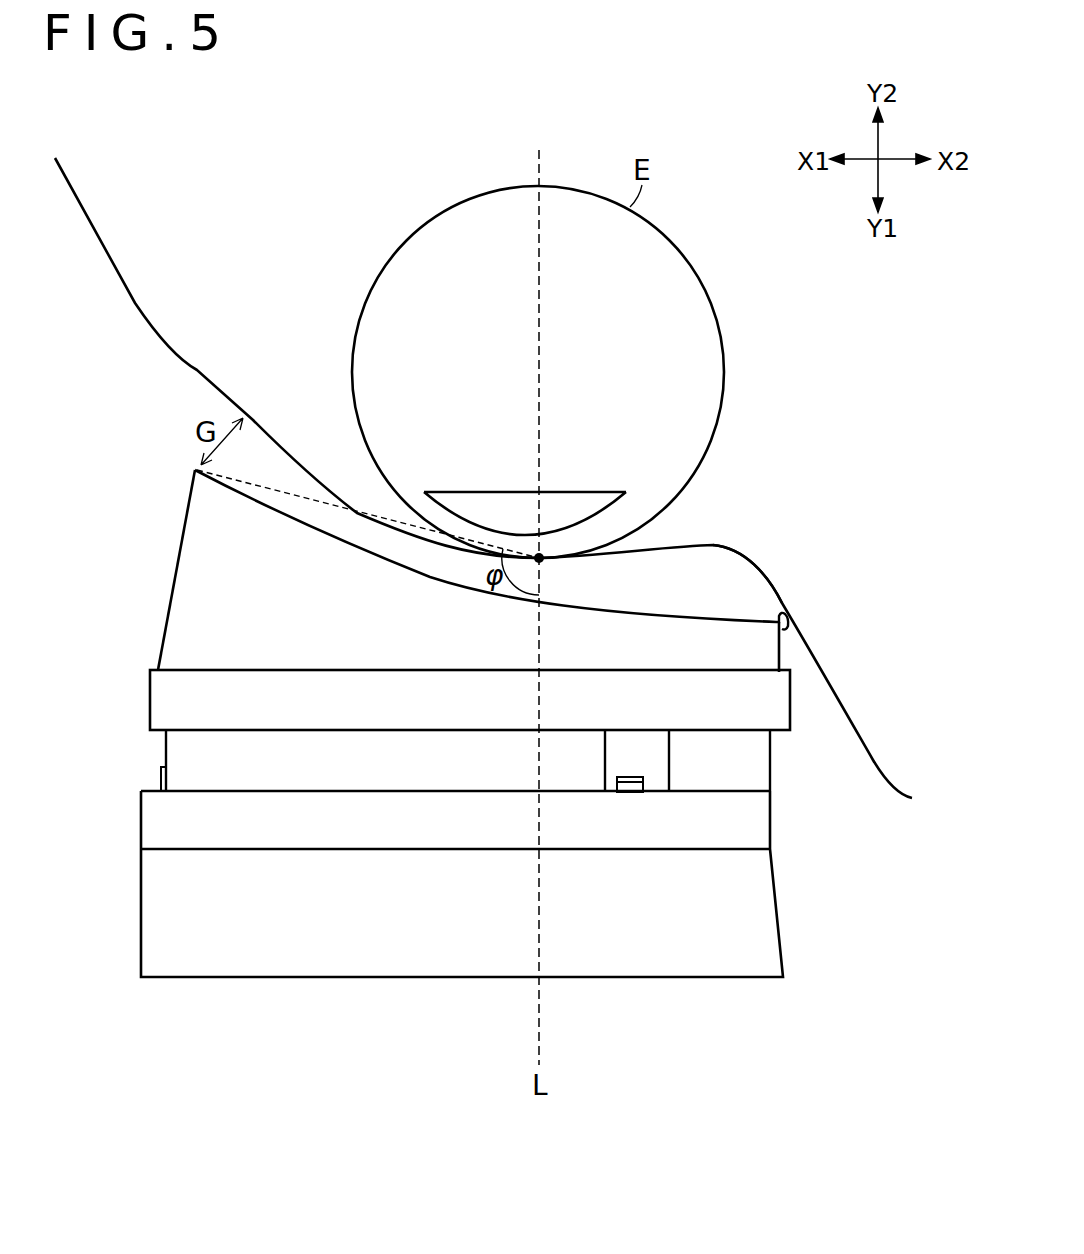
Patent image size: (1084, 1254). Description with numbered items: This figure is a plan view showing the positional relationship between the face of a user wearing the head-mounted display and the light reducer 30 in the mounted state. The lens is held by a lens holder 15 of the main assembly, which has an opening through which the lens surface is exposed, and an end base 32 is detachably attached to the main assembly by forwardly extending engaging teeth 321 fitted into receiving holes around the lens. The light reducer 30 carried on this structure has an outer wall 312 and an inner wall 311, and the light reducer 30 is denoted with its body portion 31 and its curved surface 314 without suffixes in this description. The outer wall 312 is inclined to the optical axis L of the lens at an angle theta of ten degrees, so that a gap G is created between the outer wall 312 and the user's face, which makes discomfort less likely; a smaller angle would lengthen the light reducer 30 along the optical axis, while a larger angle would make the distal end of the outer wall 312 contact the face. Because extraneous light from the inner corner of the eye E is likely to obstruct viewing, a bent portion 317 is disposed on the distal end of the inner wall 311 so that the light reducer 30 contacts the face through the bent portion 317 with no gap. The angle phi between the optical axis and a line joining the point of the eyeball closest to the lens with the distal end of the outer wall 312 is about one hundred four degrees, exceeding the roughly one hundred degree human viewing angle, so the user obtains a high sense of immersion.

The light reducer 30 is at (142, 585).
The platen 31 is at (200, 532).
The outer wall 312 is at (173, 572).
The curved support surface 314 is at (604, 617).
The bent portion 317 is at (780, 603).
The inner wall 311 is at (781, 658).
The end base 32 is at (185, 750).
The engaging teeth 321 is at (157, 777).
The lens holder 15 is at (158, 832).